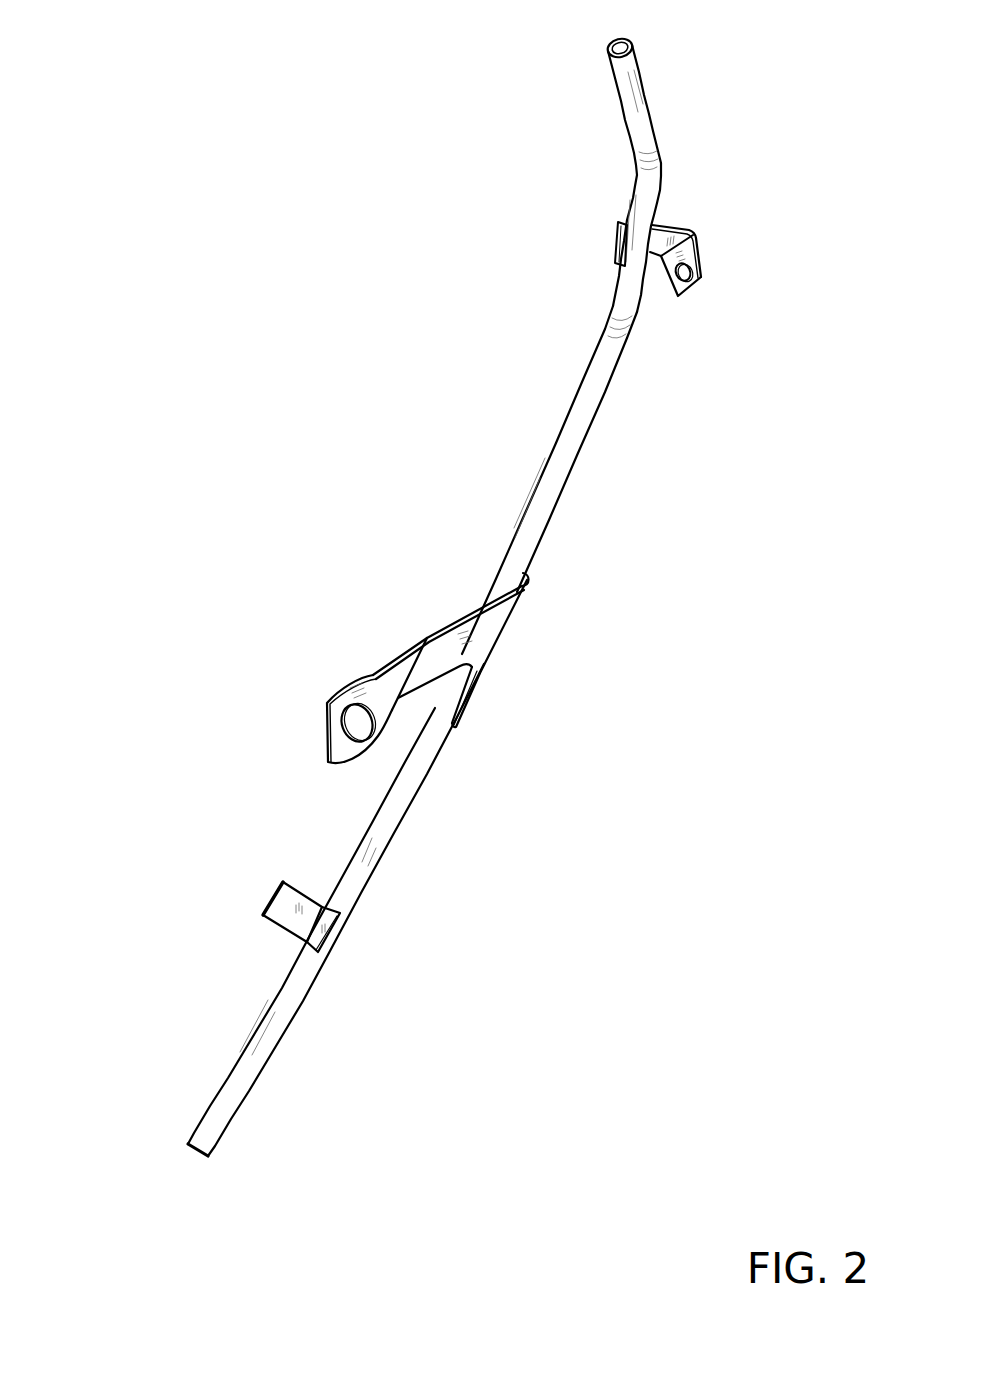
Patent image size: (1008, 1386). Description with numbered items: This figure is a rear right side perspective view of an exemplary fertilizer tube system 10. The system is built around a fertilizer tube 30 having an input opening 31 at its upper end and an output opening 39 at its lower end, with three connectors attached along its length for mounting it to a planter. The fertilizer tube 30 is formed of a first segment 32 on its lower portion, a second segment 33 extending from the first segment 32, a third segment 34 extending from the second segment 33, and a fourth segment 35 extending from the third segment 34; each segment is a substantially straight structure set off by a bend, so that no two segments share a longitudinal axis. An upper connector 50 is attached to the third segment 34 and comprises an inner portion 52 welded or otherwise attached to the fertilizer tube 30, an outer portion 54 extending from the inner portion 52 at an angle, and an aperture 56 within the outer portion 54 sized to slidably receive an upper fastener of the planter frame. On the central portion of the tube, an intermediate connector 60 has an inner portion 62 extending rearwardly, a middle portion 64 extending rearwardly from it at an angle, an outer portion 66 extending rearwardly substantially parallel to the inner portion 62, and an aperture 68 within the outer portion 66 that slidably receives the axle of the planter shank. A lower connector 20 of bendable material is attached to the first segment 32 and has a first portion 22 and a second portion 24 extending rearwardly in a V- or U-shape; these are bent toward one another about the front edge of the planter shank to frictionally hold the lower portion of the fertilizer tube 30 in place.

The fertilizer tube system 10 is at (212, 200).
The lower connector 20 is at (270, 882).
The first portion 22 is at (320, 940).
The second portion 24 is at (283, 913).
The fertilizer tube 30 is at (552, 426).
The input opening 31 is at (612, 42).
The first segment 32 is at (278, 1040).
The second segment 33 is at (565, 480).
The third segment 34 is at (627, 193).
The fourth segment 35 is at (613, 102).
The output opening 39 is at (190, 1150).
The upper connector 50 is at (693, 207).
The inner portion 52 is at (662, 228).
The outer portion 54 is at (703, 259).
The aperture 56 is at (693, 279).
The intermediate connector 60 is at (433, 613).
The inner portion 62 is at (477, 623).
The middle portion 64 is at (410, 645).
The outer portion 66 is at (338, 713).
The aperture 68 is at (342, 737).